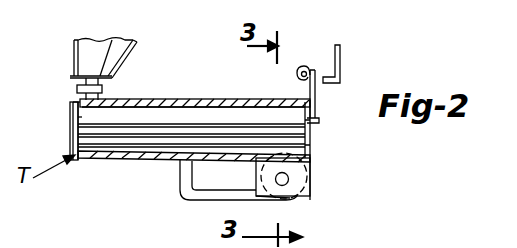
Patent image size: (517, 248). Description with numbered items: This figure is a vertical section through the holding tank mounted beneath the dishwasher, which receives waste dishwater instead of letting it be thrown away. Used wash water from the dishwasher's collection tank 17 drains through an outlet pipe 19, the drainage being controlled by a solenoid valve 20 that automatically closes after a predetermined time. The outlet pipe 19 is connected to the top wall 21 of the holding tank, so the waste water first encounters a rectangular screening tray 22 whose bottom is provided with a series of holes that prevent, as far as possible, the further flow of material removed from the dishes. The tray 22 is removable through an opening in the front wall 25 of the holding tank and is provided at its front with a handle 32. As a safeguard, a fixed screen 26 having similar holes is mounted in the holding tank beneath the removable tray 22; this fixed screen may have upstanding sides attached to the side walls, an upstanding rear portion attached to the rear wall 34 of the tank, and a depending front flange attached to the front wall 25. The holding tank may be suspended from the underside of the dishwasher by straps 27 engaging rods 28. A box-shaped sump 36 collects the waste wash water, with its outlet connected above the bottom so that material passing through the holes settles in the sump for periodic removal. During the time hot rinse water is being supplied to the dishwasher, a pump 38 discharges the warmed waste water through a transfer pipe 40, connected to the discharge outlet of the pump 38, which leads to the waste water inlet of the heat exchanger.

The tank 17 is at (136, 49).
The outlet pipe 19 is at (112, 40).
The solenoid valve 20 is at (108, 83).
The top wall 21 is at (187, 99).
The screening tray 22 is at (240, 110).
The front wall 25 is at (312, 143).
The fixed screen 26 is at (217, 135).
The straps 27 is at (315, 90).
The rods 28 is at (305, 69).
The handle 32 is at (318, 122).
The rear wall 34 is at (73, 116).
The sump 36 is at (312, 183).
The pump 38 is at (290, 198).
The transfer pipe 40 is at (178, 188).